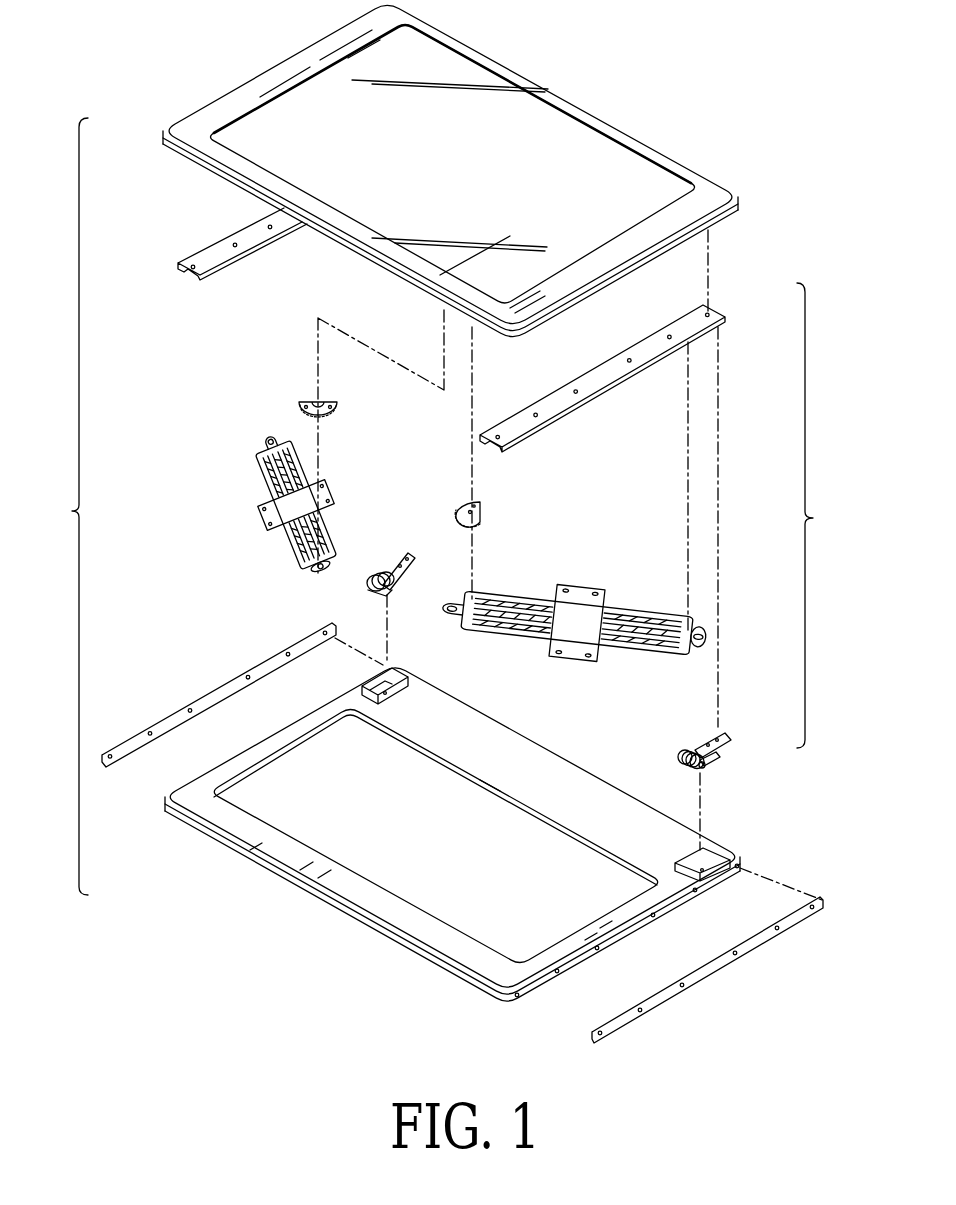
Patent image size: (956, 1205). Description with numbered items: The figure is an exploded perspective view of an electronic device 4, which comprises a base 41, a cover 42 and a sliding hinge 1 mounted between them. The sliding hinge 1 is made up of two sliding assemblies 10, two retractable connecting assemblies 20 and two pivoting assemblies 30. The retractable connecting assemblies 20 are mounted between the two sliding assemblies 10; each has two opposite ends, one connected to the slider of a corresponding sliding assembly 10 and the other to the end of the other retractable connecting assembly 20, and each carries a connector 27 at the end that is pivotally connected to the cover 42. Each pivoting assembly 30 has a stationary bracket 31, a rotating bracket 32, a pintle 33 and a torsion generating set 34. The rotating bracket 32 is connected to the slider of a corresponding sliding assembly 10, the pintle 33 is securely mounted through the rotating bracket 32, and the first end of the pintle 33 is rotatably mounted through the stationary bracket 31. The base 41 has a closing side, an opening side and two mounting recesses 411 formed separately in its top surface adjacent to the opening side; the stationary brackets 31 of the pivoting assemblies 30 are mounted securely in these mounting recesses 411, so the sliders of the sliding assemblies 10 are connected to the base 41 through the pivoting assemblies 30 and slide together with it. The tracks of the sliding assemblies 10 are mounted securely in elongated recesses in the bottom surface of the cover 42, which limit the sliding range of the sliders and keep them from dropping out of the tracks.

The sliding hinge 1 is at (816, 515).
The electronic device 4 is at (70, 506).
The sliding assembly 10 is at (246, 268).
The retractable connecting assembly 20 is at (255, 527).
The connector 27 is at (307, 403).
The pivoting assembly 30 is at (388, 552).
The stationary bracket 31 is at (718, 760).
The rotating bracket 32 is at (727, 743).
The pintle 33 is at (702, 766).
The torsion generating set 34 is at (685, 750).
The base 41 is at (452, 830).
The cover 42 is at (547, 115).
The mounting recess 411 is at (397, 690).